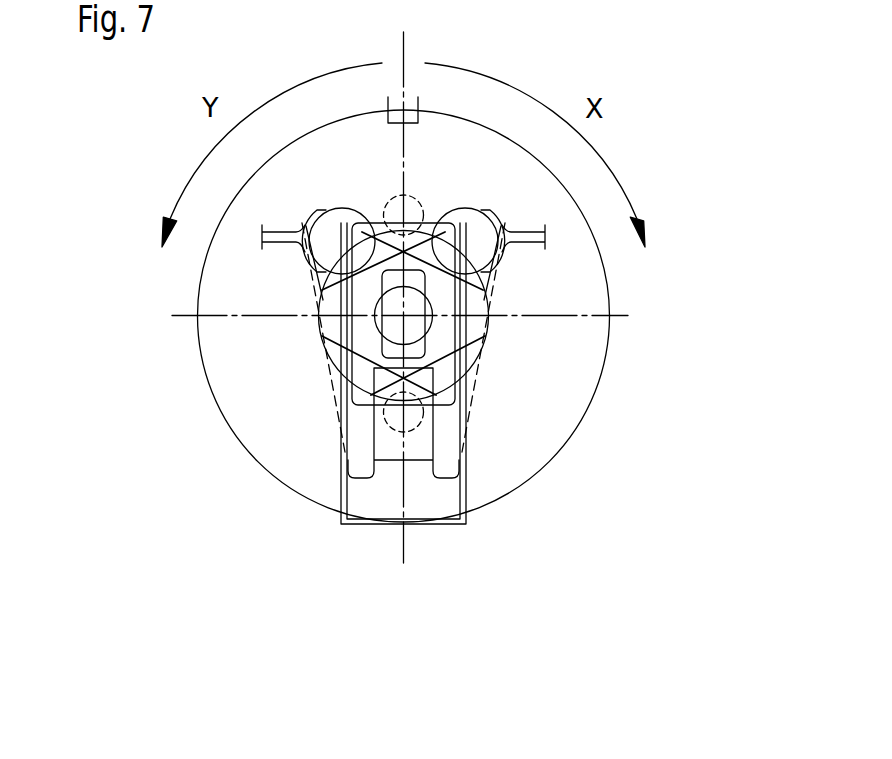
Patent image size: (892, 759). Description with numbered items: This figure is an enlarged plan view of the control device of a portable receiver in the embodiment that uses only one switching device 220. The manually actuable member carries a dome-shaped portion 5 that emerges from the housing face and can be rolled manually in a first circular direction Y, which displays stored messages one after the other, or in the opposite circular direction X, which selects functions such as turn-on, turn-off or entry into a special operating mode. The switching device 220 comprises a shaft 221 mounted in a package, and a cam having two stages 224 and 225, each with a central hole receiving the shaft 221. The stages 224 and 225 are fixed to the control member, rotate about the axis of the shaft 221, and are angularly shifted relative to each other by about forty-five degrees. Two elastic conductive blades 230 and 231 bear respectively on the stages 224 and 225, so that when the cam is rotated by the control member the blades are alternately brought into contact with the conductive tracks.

The dome-shaped portion 5 is at (541, 443).
The switching device 220 is at (423, 447).
The shaft 221 is at (412, 303).
The stage 224 is at (338, 288).
The stage 225 is at (338, 337).
The conductive blade 230 is at (345, 493).
The conductive blade 231 is at (458, 392).